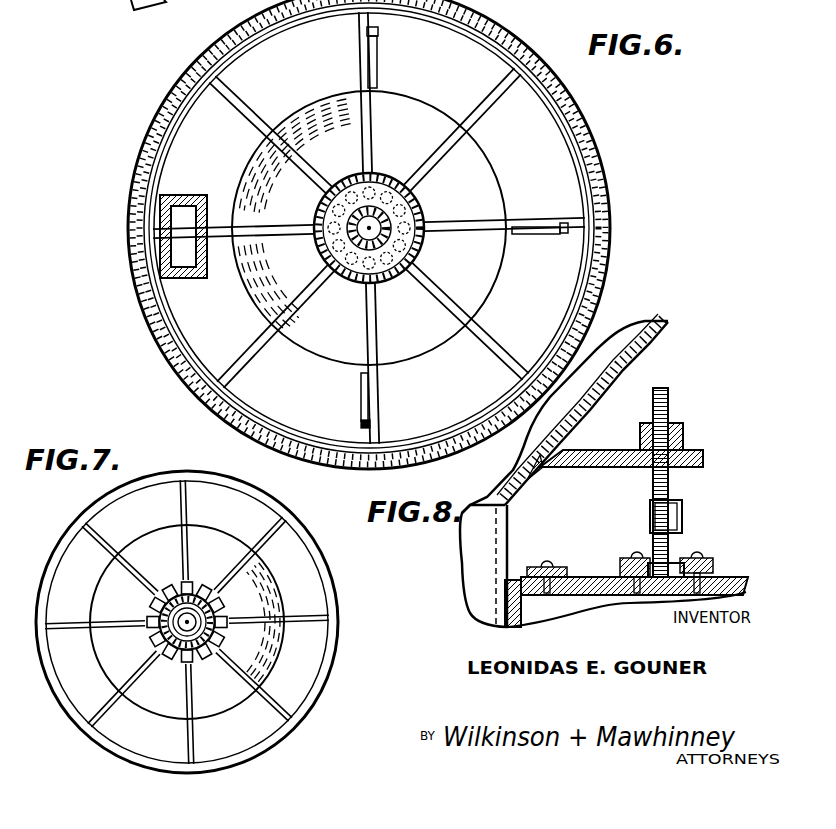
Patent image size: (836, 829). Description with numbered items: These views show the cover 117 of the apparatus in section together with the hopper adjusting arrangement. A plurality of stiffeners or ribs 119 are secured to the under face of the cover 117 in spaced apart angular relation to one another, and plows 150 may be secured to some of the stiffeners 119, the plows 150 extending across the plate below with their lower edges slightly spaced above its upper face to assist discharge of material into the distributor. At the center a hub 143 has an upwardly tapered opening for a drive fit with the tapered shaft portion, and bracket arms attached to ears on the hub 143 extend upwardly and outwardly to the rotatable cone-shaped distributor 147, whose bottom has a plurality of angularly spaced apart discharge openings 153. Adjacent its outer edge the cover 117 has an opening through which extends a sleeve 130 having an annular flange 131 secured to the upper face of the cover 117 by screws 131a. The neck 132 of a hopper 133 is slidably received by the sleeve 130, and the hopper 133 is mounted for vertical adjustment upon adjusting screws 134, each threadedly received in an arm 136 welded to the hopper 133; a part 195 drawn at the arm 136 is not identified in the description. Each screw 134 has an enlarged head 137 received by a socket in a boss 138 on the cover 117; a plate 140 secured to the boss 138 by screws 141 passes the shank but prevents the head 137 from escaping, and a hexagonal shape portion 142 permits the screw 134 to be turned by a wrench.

In FIG. 8, the cover 117 is at (733, 577).
In FIG. 6, the stiffeners or ribs 119 is at (242, 99).
In FIG. 6, the sleeve 130 is at (184, 197).
In FIG. 8, the sleeve 130 is at (521, 612).
In FIG. 8, the annular flange 131 is at (527, 578).
In FIG. 8, the screws 131a is at (566, 562).
In FIG. 6, the neck 132 is at (208, 203).
In FIG. 8, the neck 132 is at (506, 528).
In FIG. 8, the hopper 133 is at (650, 349).
In FIG. 8, the adjusting screws 134 is at (669, 402).
In FIG. 8, the arm 136 is at (607, 450).
In FIG. 8, the enlarged head 137 is at (663, 575).
In FIG. 8, the bosses 138 is at (690, 558).
In FIG. 8, the plate 140 is at (649, 558).
In FIG. 8, the screws 141 is at (636, 553).
In FIG. 8, the hexagonal shape portion 142 is at (681, 503).
In FIG. 6, the hub 143 is at (421, 207).
In FIG. 7, the hub 143 is at (215, 597).
In FIG. 6, the cone-shaped distributor 147 is at (498, 172).
In FIG. 6, the plows 150 is at (378, 57).
In FIG. 7, the discharge openings 153 is at (178, 575).
In FIG. 8, the lock nut 195 is at (671, 440).